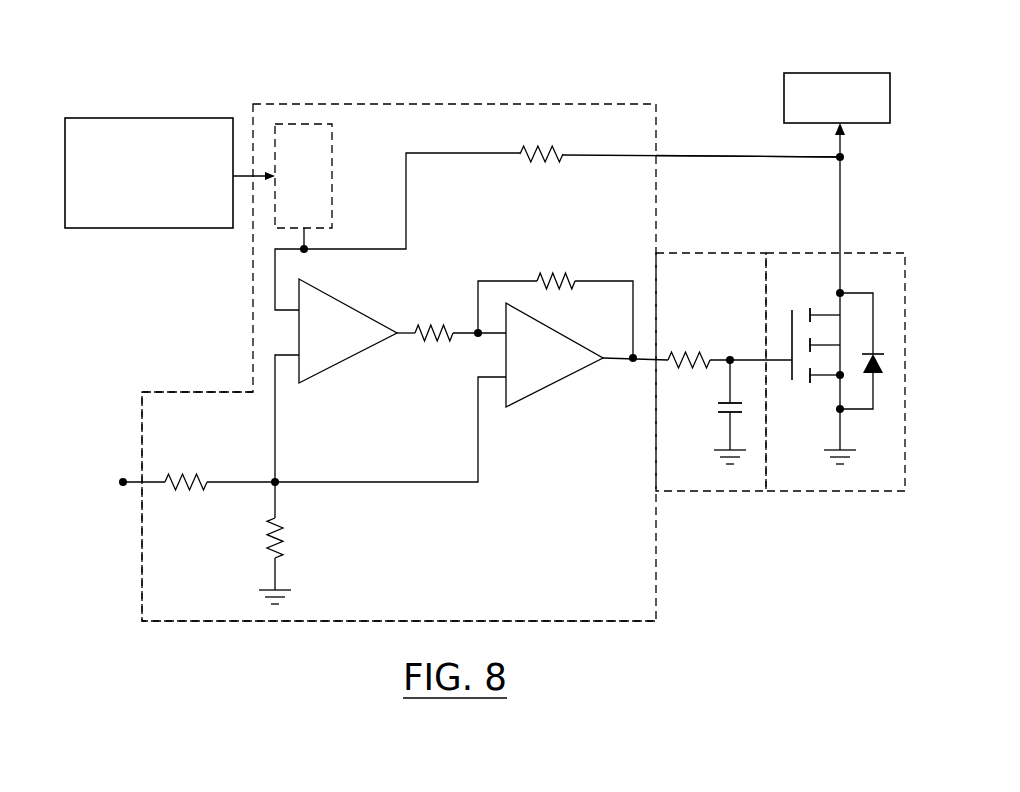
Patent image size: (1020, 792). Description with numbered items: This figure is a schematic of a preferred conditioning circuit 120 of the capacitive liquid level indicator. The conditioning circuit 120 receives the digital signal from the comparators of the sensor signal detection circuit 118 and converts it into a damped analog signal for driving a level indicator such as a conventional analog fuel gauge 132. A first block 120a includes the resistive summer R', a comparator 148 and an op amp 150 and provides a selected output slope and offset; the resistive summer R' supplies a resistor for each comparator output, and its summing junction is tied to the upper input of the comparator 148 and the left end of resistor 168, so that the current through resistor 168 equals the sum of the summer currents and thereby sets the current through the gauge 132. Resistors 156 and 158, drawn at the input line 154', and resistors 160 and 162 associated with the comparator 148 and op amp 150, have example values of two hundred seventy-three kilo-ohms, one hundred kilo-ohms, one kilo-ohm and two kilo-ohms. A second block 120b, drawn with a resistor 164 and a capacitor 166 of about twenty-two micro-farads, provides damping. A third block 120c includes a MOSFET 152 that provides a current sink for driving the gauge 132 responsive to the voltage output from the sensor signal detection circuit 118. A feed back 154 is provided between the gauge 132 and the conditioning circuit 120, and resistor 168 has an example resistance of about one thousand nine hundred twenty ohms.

The sensor signal detection circuit 118 is at (156, 112).
The conditioning circuit 120 is at (556, 82).
The first block 120a is at (233, 640).
The second block 120b is at (708, 505).
The third block 120c is at (845, 505).
The resistive summer R' is at (334, 169).
The gauge 132 is at (826, 71).
The comparator 148 is at (360, 309).
The op amp 150 is at (559, 382).
The MOSFET 152 is at (887, 390).
The feed back 154 is at (748, 127).
The input line 154' is at (117, 457).
The resistor 156 is at (196, 469).
The resistor 158 is at (293, 537).
The resistor 160 is at (453, 336).
The resistor 162 is at (557, 272).
The gate resistor 164 is at (688, 352).
The capacitor 166 is at (738, 411).
The resistor 168 is at (540, 162).